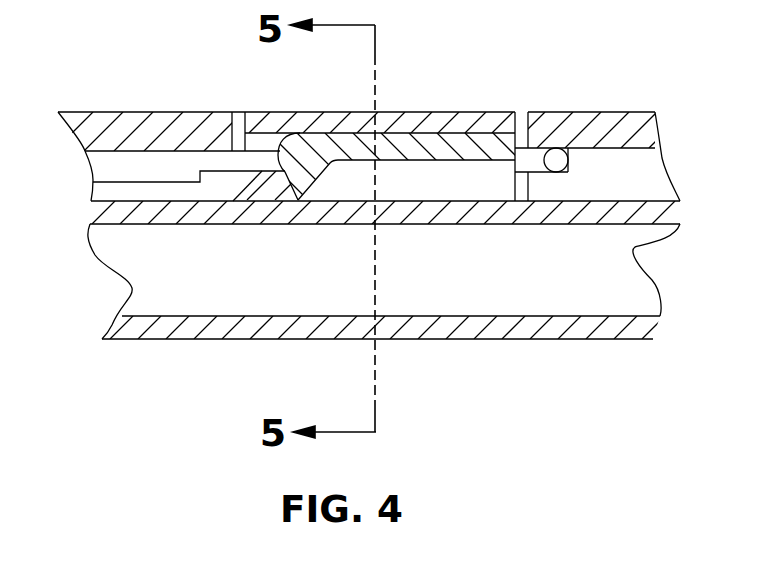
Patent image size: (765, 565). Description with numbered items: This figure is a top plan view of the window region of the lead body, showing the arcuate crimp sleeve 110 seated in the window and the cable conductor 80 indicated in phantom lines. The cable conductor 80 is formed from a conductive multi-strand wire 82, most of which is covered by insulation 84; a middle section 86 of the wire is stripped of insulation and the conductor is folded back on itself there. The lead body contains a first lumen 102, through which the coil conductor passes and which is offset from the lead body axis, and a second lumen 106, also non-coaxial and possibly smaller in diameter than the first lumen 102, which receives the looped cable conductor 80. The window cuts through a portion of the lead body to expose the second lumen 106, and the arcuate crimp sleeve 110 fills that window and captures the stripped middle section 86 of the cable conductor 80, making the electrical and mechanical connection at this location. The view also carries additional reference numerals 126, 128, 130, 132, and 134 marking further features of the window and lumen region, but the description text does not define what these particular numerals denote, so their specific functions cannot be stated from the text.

The cable conductor 80 is at (122, 147).
The conductive multi-strand wire 82 is at (243, 112).
The insulation 84 is at (153, 167).
The stripped middle section 86 is at (556, 154).
The first lumen 102 is at (643, 288).
The second lumen 106 is at (660, 174).
The arcuate crimp sleeve 110 is at (296, 111).
The latch finger 126 is at (430, 162).
The cavity 128 is at (405, 188).
The annular gap 130 is at (492, 192).
The cam surface 132 is at (314, 183).
The wedge 134 is at (263, 188).